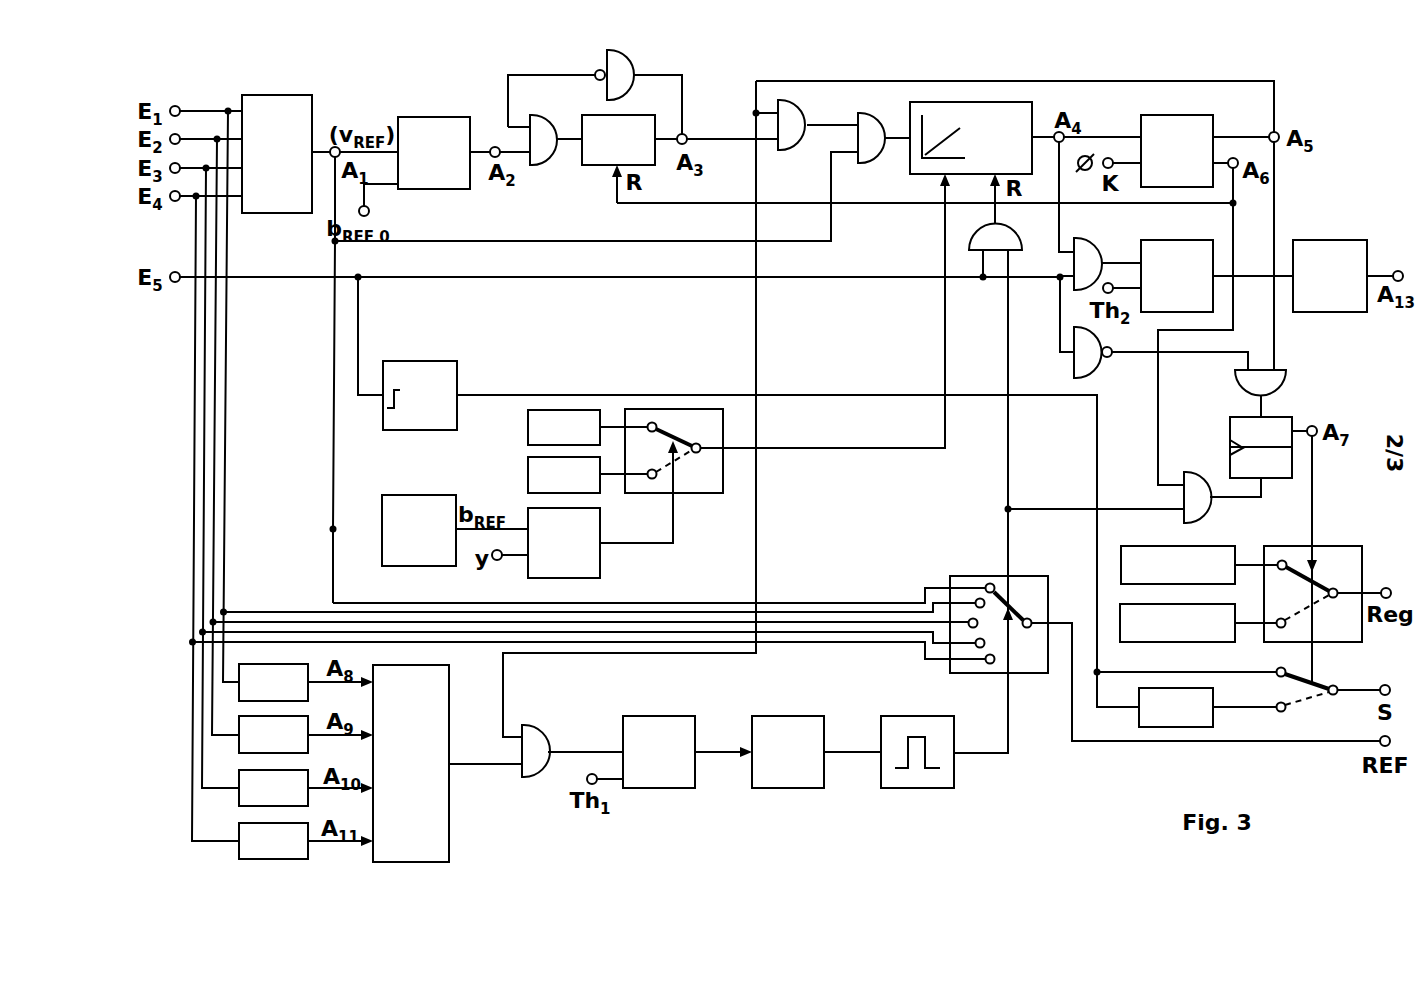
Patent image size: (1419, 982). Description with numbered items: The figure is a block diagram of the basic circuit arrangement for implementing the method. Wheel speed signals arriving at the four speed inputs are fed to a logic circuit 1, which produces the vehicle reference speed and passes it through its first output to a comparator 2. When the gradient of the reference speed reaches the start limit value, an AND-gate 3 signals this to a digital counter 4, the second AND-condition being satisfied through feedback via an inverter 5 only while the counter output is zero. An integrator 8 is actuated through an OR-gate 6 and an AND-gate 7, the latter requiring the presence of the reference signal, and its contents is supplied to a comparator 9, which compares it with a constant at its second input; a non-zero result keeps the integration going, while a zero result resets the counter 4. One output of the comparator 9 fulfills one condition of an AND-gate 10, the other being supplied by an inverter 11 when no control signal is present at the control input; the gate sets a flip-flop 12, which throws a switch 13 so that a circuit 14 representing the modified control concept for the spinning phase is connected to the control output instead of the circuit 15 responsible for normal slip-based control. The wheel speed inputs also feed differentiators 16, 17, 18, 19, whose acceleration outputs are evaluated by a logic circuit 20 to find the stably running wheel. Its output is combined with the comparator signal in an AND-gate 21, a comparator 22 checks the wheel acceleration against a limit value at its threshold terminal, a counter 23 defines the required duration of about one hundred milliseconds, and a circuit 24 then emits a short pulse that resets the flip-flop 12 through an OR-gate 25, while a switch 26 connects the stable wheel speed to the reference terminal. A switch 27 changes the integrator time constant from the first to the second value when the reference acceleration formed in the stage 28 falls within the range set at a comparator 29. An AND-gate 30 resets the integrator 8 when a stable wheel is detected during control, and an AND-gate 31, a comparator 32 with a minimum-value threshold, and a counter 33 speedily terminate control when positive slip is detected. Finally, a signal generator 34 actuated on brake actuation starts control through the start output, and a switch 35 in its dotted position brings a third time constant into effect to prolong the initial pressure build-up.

The logic circuit 1 is at (272, 110).
The comparator 2 is at (432, 128).
The AND-gate 3 is at (540, 160).
The digital counter 4 is at (596, 160).
The inverter 5 is at (628, 65).
The OR-gate 6 is at (795, 145).
The AND-gate 7 is at (875, 158).
The integrator 8 is at (912, 110).
The comparator 9 is at (1143, 120).
The AND-gate 10 is at (1278, 382).
The inverter 11 is at (1092, 372).
The flip-flop 12 is at (1238, 427).
The switch 13 is at (1337, 553).
The circuit 14 is at (1178, 637).
The circuit 15 is at (1180, 550).
The differentiator 16 is at (273, 682).
The differentiator 17 is at (273, 734).
The differentiator 18 is at (273, 788).
The differentiator 19 is at (273, 841).
The logic circuit 20 is at (438, 837).
The AND-gate 21 is at (537, 763).
The comparator 22 is at (665, 782).
The counter 23 is at (795, 782).
The circuit 24 is at (925, 782).
The OR-gate 25 is at (1200, 503).
The switch 26 is at (970, 575).
The switch 27 is at (708, 483).
The stage 28 is at (418, 500).
The comparator 29 is at (590, 565).
The AND-gate 30 is at (1005, 232).
The AND-gate 31 is at (1090, 248).
The comparator 32 is at (1168, 250).
The counter 33 is at (1330, 245).
The signal generator 34 is at (422, 370).
The switch 35 is at (1317, 680).